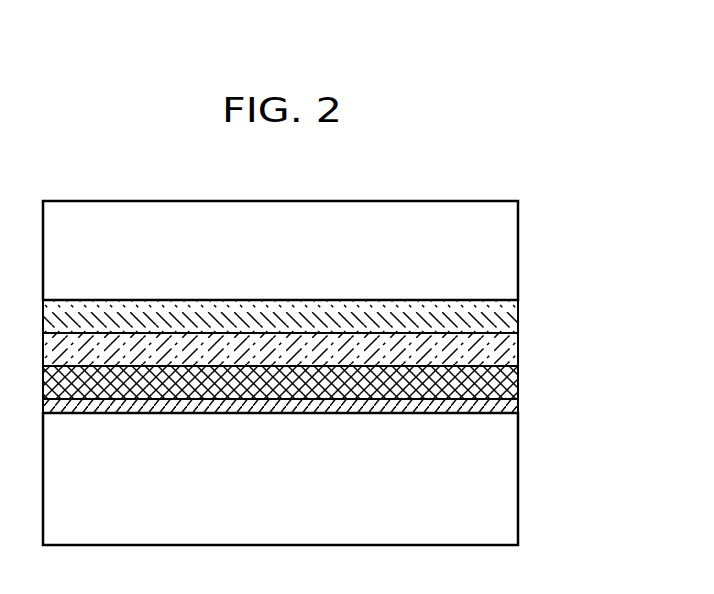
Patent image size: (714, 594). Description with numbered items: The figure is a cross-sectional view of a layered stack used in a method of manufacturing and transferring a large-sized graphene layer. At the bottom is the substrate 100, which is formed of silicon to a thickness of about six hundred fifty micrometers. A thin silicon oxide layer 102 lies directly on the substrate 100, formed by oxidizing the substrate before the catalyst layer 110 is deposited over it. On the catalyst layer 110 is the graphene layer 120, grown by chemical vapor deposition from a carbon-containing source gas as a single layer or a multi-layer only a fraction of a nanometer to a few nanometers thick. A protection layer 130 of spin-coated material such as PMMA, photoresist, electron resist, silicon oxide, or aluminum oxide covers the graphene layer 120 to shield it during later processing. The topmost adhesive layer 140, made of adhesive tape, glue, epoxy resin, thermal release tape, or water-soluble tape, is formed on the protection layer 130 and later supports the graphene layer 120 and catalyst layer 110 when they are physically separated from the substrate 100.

The substrate 100 is at (518, 478).
The silicon oxide layer 102 is at (518, 406).
The catalyst layer 110 is at (518, 383).
The graphene layer 120 is at (518, 350).
The protection layer 130 is at (518, 317).
The adhesive layer 140 is at (518, 252).